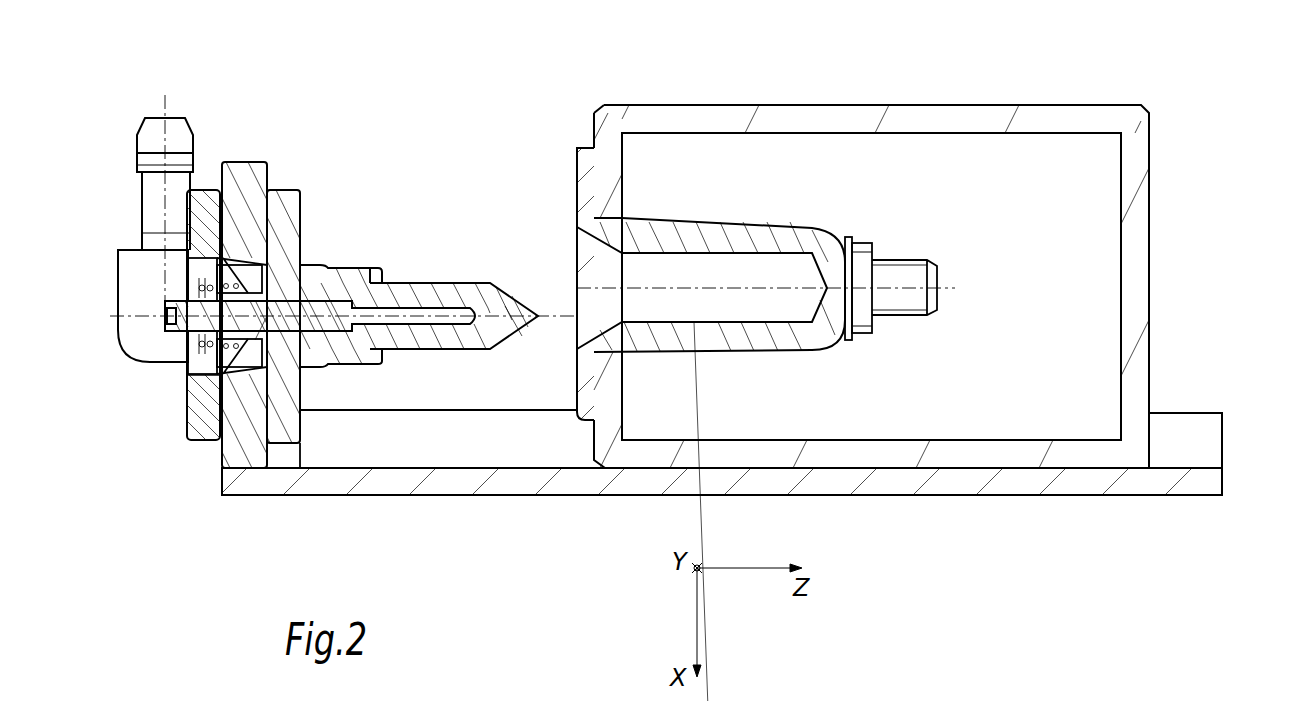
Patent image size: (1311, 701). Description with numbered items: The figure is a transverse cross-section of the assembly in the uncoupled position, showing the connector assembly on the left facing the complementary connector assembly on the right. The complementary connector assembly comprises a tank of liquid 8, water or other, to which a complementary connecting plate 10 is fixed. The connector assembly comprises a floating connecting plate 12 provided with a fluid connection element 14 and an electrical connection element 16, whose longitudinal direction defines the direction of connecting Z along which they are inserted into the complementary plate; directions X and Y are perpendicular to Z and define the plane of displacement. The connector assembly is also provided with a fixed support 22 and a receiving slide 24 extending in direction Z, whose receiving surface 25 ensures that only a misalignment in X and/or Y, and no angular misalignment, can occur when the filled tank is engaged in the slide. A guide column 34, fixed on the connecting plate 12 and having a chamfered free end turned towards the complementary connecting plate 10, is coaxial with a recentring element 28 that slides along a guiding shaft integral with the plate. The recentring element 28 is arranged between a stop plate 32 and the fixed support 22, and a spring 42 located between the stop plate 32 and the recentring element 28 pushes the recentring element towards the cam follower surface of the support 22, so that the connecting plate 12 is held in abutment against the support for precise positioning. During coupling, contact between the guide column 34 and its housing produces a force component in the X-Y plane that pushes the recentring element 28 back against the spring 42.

The tank of liquid 8 is at (863, 403).
The complementary connecting plate 10 is at (585, 430).
The floating connecting plate 12 is at (280, 205).
The fluid connection element 14 is at (155, 190).
The electrical connection element 16 is at (350, 273).
The fixed support 22 is at (240, 177).
The receiving slide 24 is at (1015, 495).
The receiving surface 25 is at (1200, 476).
The recentring element 28 is at (197, 437).
The stop plate 32 is at (214, 190).
The guide column 34 is at (452, 338).
The spring 42 is at (200, 348).